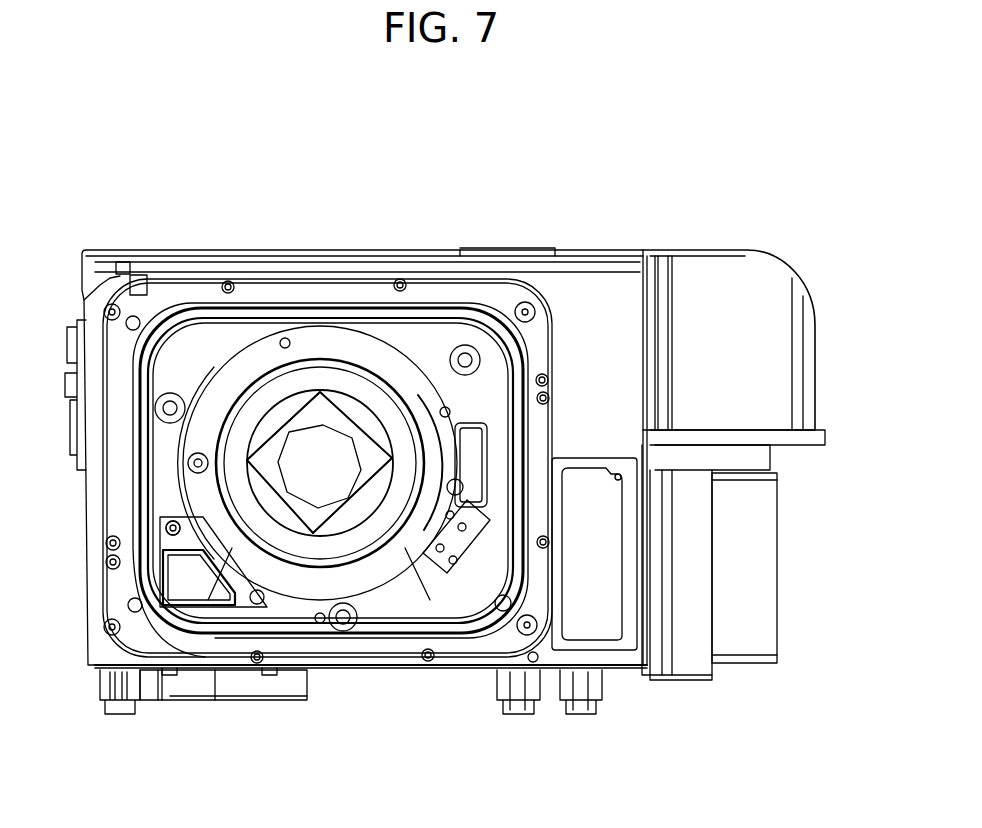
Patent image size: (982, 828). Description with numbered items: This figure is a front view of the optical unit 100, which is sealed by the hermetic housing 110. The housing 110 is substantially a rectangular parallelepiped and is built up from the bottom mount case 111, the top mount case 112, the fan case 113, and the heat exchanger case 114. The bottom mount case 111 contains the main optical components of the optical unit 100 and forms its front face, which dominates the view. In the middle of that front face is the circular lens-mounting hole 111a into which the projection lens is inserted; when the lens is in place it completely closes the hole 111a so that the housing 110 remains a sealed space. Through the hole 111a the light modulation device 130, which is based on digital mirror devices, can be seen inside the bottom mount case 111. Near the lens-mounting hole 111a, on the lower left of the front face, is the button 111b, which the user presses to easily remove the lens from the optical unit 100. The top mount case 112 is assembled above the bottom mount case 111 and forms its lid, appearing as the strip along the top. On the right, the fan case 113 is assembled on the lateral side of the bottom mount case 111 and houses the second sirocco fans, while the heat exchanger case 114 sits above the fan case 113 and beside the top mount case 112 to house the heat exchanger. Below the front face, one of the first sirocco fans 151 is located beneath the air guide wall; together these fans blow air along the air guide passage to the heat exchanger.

The optical unit 100 is at (112, 216).
The hermetic housing 110 is at (726, 216).
The bottom mount case 111 is at (92, 672).
The lens-mounting hole 111a is at (372, 545).
The button 111b is at (190, 580).
The top mount case 112 is at (437, 248).
The fan case 113 is at (758, 567).
The heat exchanger case 114 is at (782, 252).
The light modulation device 130 is at (320, 440).
The sirocco fan 151 is at (258, 683).